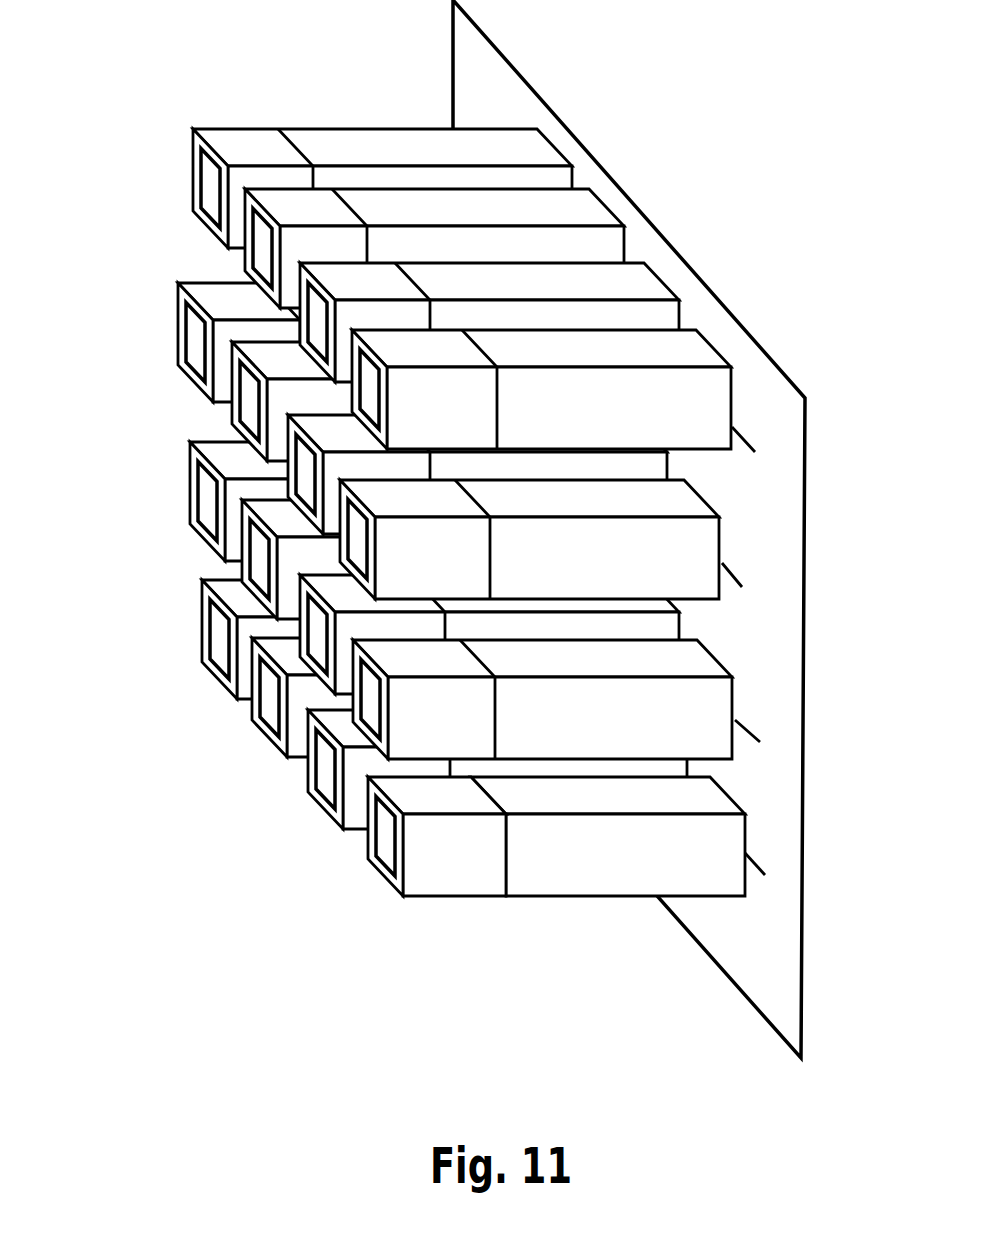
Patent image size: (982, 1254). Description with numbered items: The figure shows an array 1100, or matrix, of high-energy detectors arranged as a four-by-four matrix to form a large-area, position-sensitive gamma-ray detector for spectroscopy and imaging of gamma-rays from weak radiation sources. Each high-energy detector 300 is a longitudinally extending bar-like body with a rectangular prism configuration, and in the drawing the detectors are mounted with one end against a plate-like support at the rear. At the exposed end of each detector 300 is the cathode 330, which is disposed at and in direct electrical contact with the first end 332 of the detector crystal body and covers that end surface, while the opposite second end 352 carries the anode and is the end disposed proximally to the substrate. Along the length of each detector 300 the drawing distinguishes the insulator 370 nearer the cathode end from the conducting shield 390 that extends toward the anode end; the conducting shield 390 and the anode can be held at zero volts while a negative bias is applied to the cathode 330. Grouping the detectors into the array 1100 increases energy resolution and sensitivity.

The array of detectors 1100 is at (458, 529).
The high-energy detector 300 is at (499, 907).
The cathode 330 is at (385, 832).
The first end of detector crystal body 332 is at (334, 875).
The second end of detector crystal body 352 is at (762, 832).
The insulator 370 is at (375, 907).
The conducting shield 390 is at (580, 878).